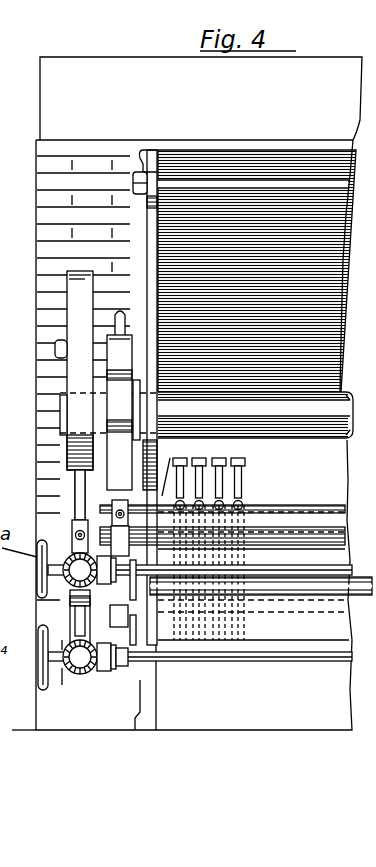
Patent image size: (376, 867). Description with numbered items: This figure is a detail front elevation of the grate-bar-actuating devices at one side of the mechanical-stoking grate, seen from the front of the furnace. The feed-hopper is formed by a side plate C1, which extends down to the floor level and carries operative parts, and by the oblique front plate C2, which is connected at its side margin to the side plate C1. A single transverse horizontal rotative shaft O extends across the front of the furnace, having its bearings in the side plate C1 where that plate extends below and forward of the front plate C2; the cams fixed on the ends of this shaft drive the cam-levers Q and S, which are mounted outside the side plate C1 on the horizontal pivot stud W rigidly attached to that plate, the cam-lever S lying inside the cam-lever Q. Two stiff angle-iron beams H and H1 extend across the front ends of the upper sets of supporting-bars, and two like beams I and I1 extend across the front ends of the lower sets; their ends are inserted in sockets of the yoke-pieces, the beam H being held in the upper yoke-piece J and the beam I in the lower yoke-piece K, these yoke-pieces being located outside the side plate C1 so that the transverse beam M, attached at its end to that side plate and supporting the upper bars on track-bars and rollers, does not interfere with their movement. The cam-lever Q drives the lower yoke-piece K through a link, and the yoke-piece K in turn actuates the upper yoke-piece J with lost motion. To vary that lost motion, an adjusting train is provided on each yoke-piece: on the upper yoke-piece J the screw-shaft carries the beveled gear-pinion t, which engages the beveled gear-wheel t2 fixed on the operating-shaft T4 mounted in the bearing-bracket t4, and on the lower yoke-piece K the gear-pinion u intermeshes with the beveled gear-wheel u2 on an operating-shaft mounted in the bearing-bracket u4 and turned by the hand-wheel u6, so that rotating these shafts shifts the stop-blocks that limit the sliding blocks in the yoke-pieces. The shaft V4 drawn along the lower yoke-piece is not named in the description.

The side plate C1 is at (146, 231).
The front plate C2 is at (339, 280).
The cam-lever Q is at (74, 395).
The pivot stud W is at (99, 336).
The cam-lever S is at (119, 412).
The rotative shaft O is at (255, 415).
The needle fingers E is at (244, 462).
The beam H is at (262, 532).
The beam H1 is at (222, 516).
The upper yoke-piece J is at (63, 495).
The beveled gear-wheel t2 is at (75, 552).
The bearing-bracket t4 is at (108, 560).
The operating-shaft T4 is at (200, 560).
The transverse beam M is at (354, 580).
The beveled gear-pinion t is at (70, 584).
The beam I1 is at (251, 610).
The beam I is at (308, 641).
The lower yoke-piece K is at (112, 620).
The hand-wheel u6 is at (37, 688).
The gear-pinion u is at (77, 677).
The beveled gear-wheel u2 is at (100, 675).
The bearing-bracket u4 is at (108, 672).
The lower shaft V4 is at (246, 662).